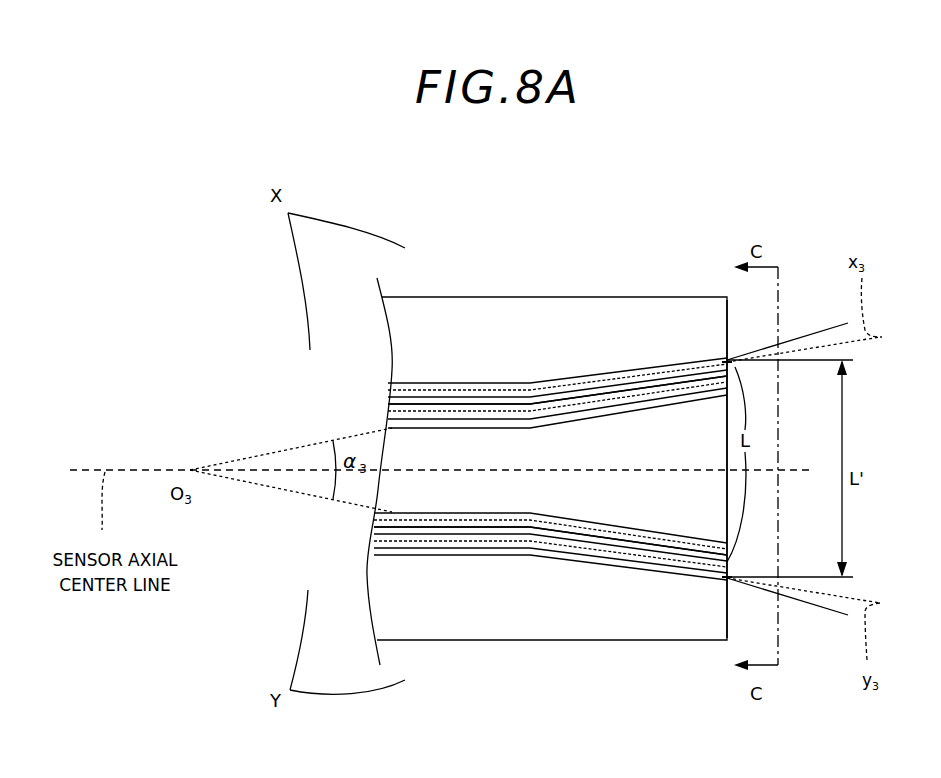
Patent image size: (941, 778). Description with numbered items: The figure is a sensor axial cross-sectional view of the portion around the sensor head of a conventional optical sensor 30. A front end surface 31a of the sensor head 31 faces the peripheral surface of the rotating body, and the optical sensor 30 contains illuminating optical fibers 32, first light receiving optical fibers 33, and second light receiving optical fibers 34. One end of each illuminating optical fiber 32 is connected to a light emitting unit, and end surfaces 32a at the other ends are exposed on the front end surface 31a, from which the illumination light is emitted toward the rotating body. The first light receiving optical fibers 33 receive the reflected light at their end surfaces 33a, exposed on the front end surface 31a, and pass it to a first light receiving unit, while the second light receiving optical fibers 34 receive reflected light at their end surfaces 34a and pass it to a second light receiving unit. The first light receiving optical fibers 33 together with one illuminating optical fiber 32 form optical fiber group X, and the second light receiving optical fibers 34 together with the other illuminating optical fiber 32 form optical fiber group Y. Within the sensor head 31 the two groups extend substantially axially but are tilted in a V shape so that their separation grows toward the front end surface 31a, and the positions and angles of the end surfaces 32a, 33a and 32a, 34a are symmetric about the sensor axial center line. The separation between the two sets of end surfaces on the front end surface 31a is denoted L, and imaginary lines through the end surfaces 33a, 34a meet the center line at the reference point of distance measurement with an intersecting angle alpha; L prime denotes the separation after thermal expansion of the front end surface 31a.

The optical sensor 30 is at (437, 751).
The sensor head 31 is at (560, 268).
The front end surface 31a is at (735, 335).
The illuminating optical fibers 32 is at (433, 397).
The end surfaces of illuminating optical fibers 32a is at (735, 372).
The first light receiving optical fibers 33 is at (405, 398).
The end surfaces of first light receiving optical fibers 33a is at (727, 360).
The second light receiving optical fibers 34 is at (392, 535).
The end surfaces of second light receiving optical fibers 34a is at (730, 580).